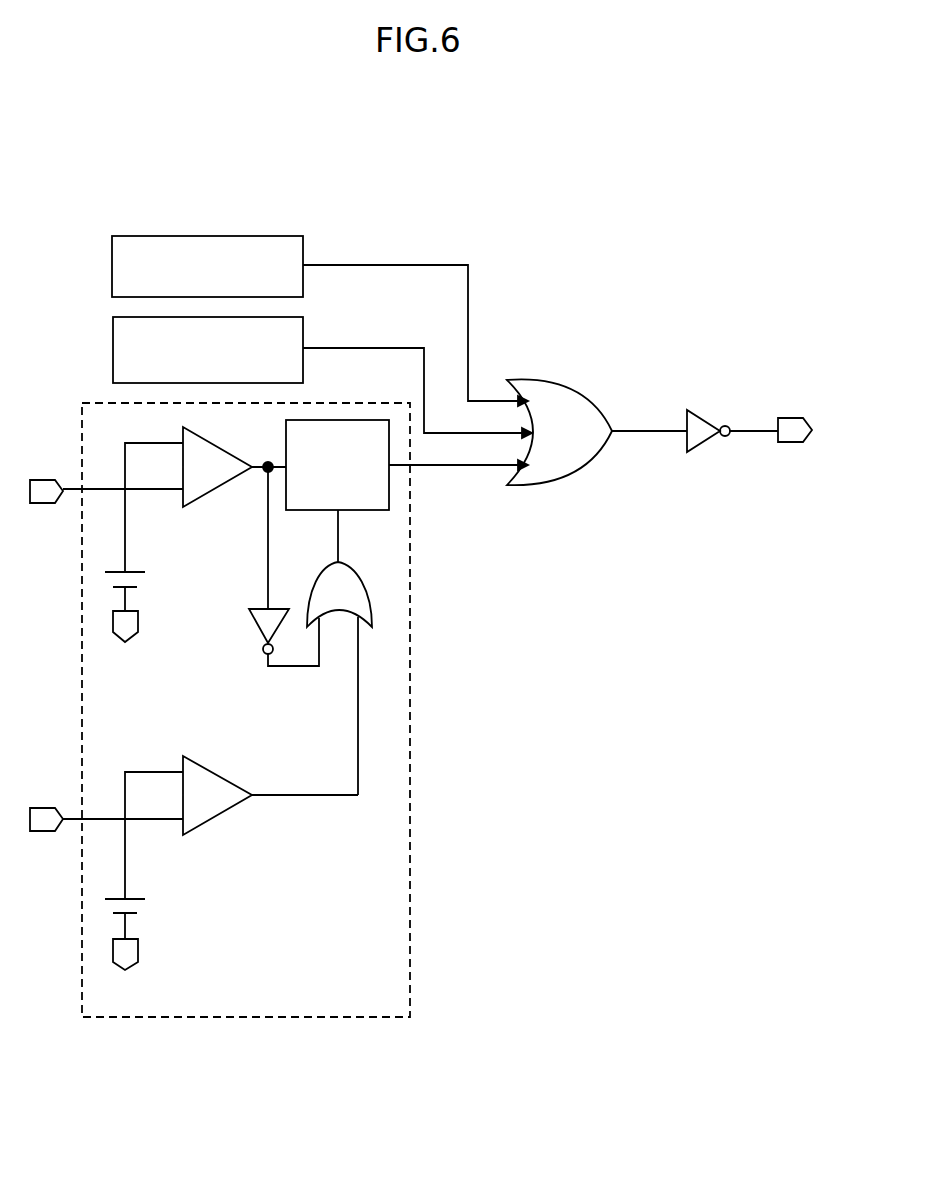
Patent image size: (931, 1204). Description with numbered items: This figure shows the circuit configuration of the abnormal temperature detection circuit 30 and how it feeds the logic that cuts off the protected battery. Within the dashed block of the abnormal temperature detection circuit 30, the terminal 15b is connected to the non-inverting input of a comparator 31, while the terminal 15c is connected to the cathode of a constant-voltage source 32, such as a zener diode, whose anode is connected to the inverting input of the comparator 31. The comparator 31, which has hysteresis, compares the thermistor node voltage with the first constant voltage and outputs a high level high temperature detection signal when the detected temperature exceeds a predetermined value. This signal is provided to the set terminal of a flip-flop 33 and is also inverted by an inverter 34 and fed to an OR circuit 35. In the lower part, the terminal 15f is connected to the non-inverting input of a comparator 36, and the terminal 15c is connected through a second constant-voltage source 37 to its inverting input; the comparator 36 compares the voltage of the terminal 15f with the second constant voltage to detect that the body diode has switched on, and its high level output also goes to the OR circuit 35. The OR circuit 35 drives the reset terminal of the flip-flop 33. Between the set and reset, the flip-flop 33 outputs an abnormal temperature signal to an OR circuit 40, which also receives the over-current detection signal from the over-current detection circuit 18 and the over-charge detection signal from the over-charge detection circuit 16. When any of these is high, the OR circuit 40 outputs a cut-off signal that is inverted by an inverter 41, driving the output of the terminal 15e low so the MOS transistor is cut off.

The over-current detection circuit 18 is at (299, 236).
The over-charge detection circuit 16 is at (300, 317).
The OR circuit 40 is at (578, 398).
The inverter 41 is at (705, 418).
The terminal 15e is at (787, 442).
The abnormal temperature detection circuit 30 is at (412, 547).
The comparator 31 is at (213, 492).
The terminal 15b is at (40, 503).
The constant-voltage source 32 is at (140, 572).
The terminal 15c is at (138, 620).
The flip-flop 33 is at (368, 420).
The inverter 34 is at (252, 620).
The OR circuit 35 is at (352, 578).
The comparator 36 is at (213, 822).
The terminal 15f is at (40, 831).
The constant-voltage source 37 is at (140, 899).